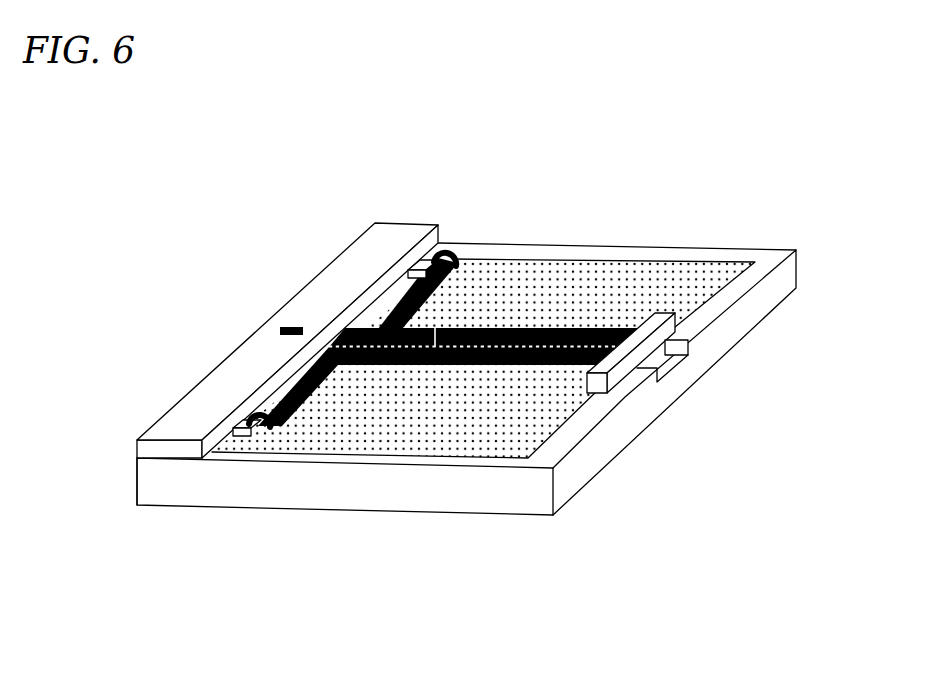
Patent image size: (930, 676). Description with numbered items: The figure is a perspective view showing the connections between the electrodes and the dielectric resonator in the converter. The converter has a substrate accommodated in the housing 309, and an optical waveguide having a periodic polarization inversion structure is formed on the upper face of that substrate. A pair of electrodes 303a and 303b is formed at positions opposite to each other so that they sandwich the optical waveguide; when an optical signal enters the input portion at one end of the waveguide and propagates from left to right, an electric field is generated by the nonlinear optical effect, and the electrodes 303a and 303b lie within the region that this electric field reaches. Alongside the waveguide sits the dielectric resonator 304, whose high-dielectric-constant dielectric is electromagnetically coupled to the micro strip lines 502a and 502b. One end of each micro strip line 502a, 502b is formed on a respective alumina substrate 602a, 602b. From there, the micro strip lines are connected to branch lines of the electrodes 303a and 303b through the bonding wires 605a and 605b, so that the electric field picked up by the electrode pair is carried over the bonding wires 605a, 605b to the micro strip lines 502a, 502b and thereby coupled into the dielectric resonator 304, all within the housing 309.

The dielectric resonator 304 is at (408, 223).
The housing 309 is at (346, 511).
The micro strip line 502a is at (243, 420).
The micro strip line 502b is at (423, 263).
The alumina substrate 602a is at (255, 420).
The alumina substrate 602b is at (430, 267).
The bonding wire 605a is at (258, 430).
The bonding wire 605b is at (413, 301).
The electrode 303a is at (442, 367).
The electrode 303b is at (470, 325).